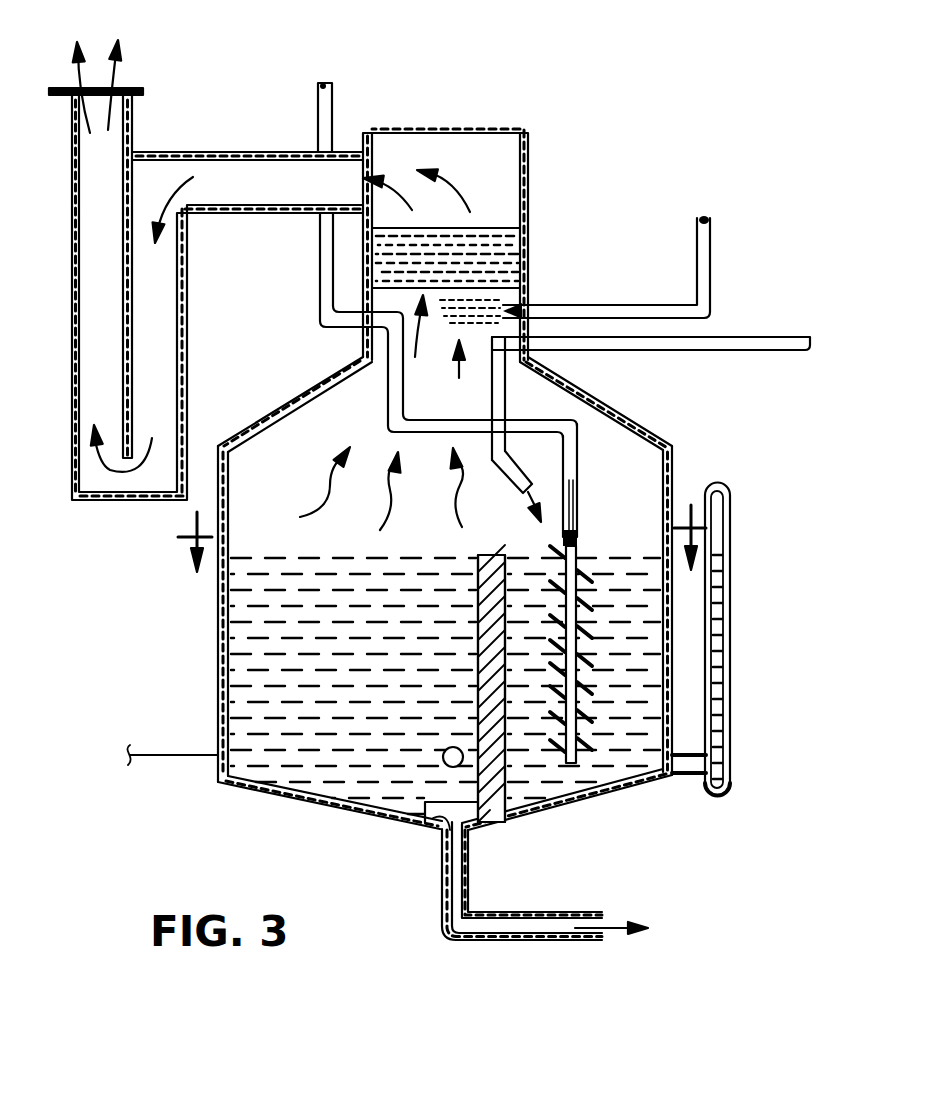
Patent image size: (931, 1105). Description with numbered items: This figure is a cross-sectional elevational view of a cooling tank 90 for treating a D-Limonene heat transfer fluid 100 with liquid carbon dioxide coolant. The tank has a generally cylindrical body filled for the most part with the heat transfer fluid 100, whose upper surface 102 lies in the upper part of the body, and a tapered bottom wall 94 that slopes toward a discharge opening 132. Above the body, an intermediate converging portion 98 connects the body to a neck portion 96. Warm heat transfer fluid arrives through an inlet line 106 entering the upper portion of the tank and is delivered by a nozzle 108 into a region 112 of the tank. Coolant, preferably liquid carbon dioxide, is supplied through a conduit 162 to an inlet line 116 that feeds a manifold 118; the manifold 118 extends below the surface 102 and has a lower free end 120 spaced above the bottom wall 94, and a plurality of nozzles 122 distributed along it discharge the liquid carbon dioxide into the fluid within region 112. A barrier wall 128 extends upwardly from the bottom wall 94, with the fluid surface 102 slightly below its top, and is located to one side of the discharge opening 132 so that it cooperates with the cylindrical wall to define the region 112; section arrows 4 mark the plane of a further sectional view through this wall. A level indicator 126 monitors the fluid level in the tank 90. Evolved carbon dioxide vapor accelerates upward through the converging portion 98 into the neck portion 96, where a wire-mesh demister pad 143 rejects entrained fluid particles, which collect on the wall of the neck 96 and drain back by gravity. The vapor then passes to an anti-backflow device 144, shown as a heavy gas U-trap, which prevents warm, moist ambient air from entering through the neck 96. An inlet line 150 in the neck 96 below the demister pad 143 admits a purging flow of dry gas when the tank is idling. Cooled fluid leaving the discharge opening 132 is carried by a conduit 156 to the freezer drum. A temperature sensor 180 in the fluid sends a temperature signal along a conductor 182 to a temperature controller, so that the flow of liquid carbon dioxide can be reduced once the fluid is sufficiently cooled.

The cooling tank 90 is at (470, 604).
The tapered bottom wall 94 is at (550, 815).
The neck portion 96 is at (528, 150).
The intermediate converging portion 98 is at (341, 370).
The D-Limonene heat transfer fluid 100 is at (265, 633).
The upper surface 102 is at (250, 556).
The inlet line 106 is at (660, 352).
The nozzle 108 is at (522, 488).
The region 112 is at (672, 465).
The inlet line 116 is at (322, 318).
The manifold 118 is at (579, 450).
The lower free end 120 is at (585, 770).
The nozzles 122 is at (587, 607).
The level indicator 126 is at (722, 662).
The barrier wall 128 is at (482, 553).
The discharge opening 132 is at (435, 826).
The demister pad 143 is at (520, 258).
The anti-backflow device 144 is at (206, 269).
The inlet line 150 is at (662, 306).
The conduit 156 is at (457, 868).
The conduit 162 is at (333, 98).
The temperature sensor 180 is at (446, 747).
The conductor 182 is at (196, 757).
The section line 4- 4 is at (442, 553).